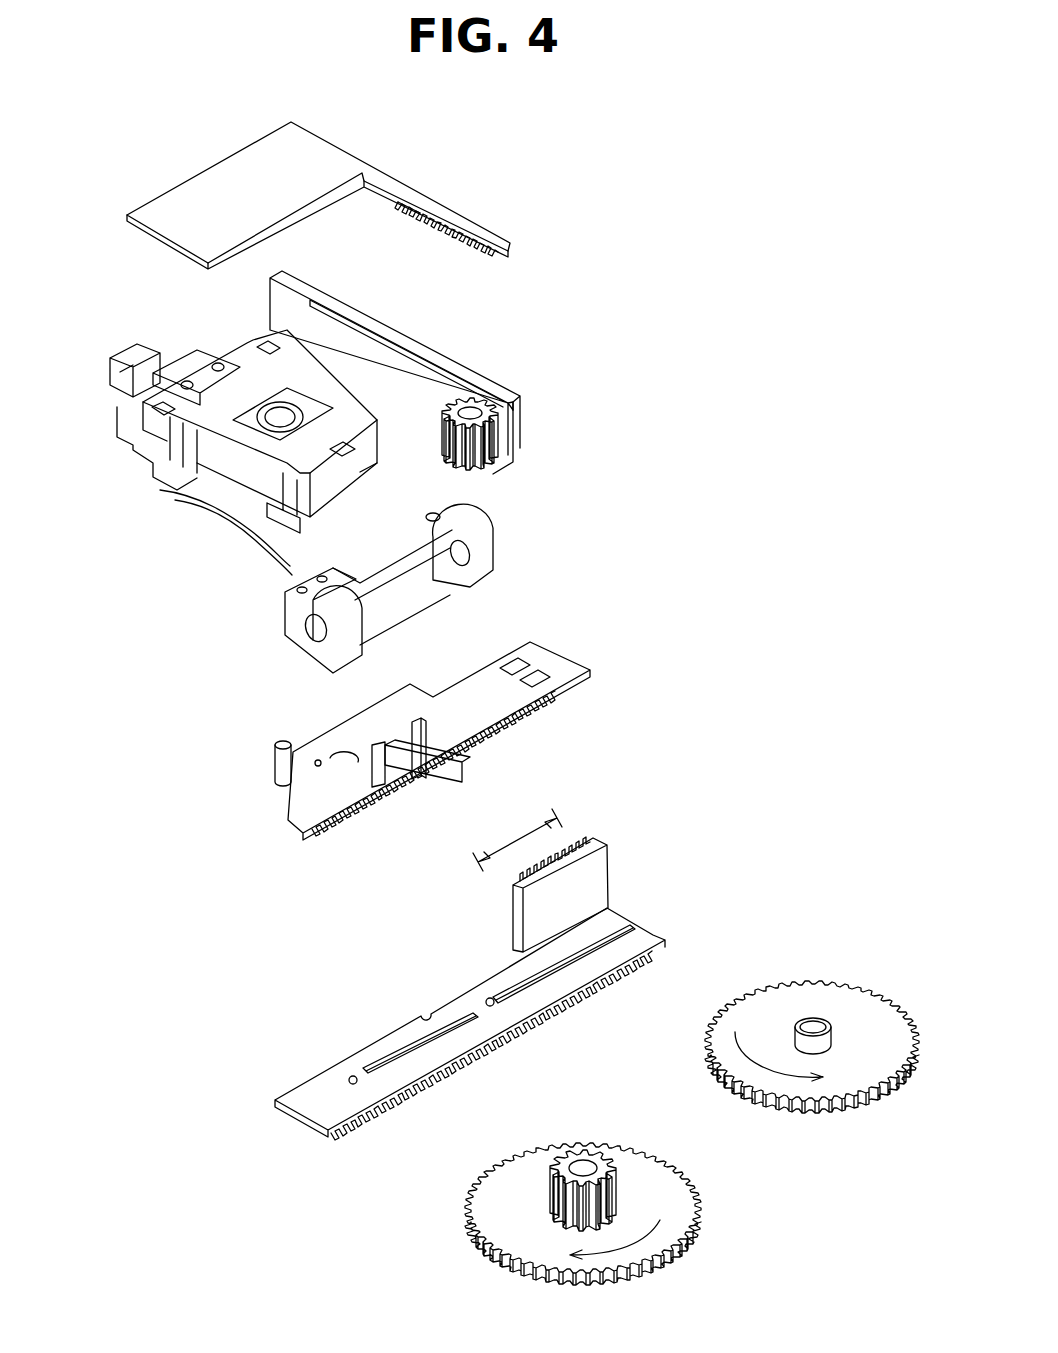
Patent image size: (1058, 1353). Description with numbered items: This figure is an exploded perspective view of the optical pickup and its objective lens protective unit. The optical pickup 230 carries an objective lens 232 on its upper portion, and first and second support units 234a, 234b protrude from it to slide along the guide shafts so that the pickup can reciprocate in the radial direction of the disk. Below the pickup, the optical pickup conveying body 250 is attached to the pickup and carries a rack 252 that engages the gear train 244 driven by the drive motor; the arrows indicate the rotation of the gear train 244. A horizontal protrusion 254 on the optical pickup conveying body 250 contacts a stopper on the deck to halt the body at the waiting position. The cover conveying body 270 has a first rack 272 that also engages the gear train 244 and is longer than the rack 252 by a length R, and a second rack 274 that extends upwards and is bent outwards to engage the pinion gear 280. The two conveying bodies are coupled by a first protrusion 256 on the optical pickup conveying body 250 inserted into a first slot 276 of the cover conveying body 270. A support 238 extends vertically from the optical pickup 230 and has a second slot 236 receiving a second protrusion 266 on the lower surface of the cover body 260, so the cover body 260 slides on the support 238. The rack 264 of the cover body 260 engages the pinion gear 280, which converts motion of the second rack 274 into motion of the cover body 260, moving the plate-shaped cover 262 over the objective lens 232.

The optical pickup 230 is at (330, 488).
The objective lens 232 is at (262, 427).
The first support unit 234a is at (310, 650).
The second support unit 234b is at (130, 358).
The second slot 236 is at (393, 342).
The support 238 is at (507, 403).
The gear train 244 is at (705, 1220).
The optical pickup conveying body 250 is at (463, 763).
The rack 252 is at (327, 830).
The horizontal protrusion 254 is at (440, 763).
The first protrusion 256 is at (520, 713).
The cover body 260 is at (322, 218).
The cover 262 is at (190, 198).
The rack 264 is at (490, 257).
The second protrusion 266 is at (395, 200).
The cover conveying body 270 is at (518, 1007).
The first rack 272 is at (348, 1135).
The second rack 274 is at (573, 833).
The first slot 276 is at (620, 940).
The pinion gear 280 is at (503, 457).